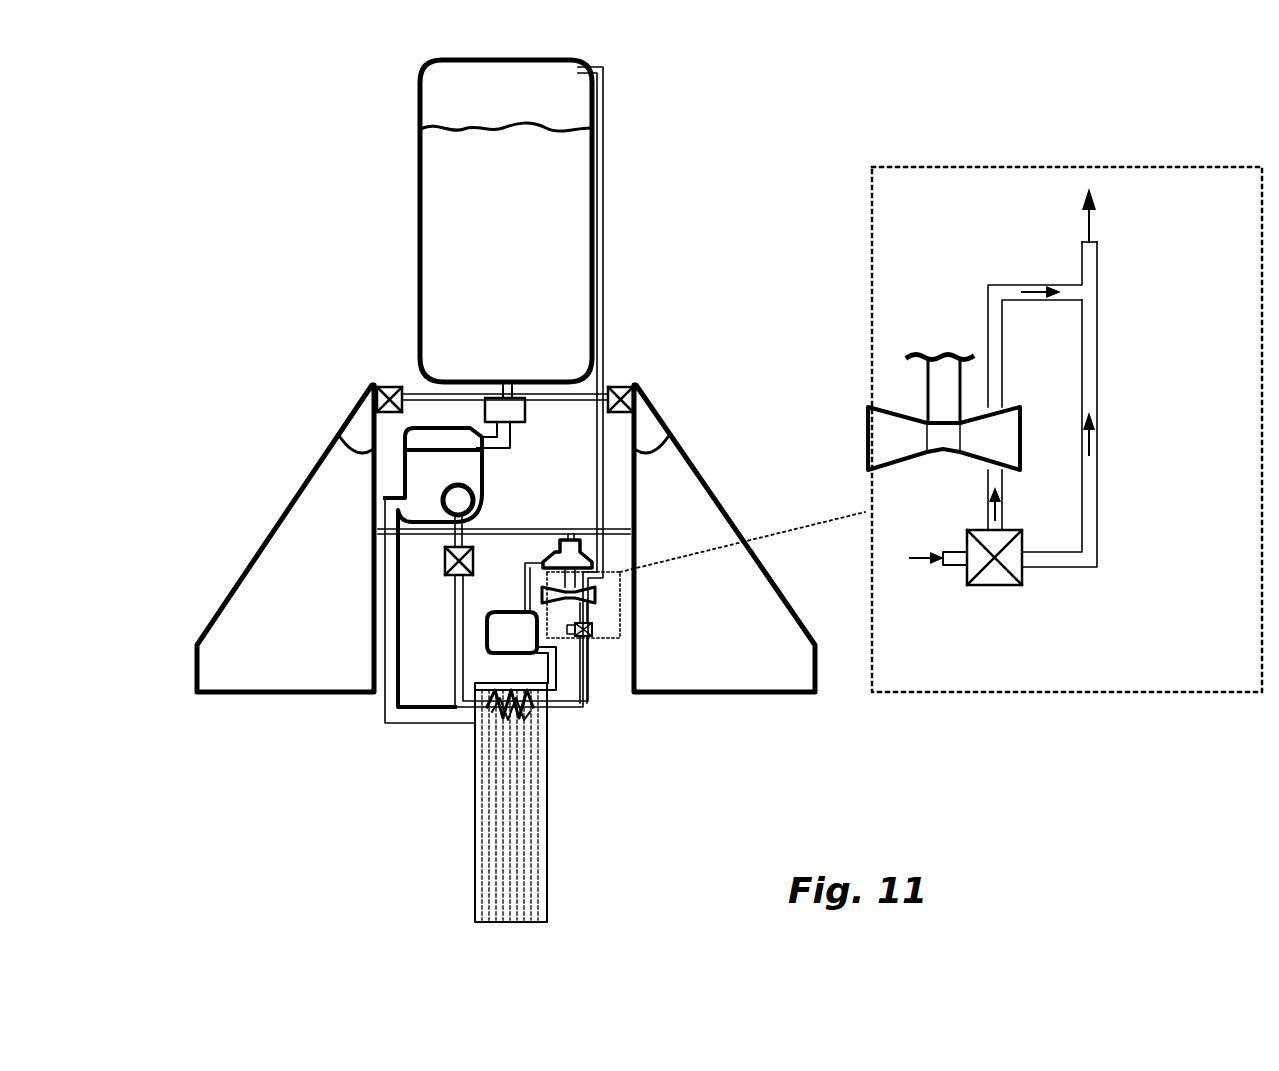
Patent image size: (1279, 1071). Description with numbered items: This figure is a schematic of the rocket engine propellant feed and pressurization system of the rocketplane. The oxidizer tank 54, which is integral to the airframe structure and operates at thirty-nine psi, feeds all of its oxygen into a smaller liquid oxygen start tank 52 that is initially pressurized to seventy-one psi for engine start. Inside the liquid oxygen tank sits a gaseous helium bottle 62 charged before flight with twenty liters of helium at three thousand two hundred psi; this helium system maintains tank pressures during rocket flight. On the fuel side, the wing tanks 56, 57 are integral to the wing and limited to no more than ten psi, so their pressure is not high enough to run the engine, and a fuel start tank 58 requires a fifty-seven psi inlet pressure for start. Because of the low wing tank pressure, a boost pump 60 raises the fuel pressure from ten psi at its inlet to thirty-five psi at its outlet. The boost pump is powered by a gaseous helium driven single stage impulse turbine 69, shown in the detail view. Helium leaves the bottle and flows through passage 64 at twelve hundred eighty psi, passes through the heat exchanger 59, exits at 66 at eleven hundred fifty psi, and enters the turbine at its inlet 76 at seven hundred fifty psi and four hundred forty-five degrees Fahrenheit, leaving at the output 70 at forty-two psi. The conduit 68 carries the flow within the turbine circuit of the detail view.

The liquid O2 start tank 52 is at (413, 462).
The oxidizer tank 54 is at (455, 190).
The wing fuel tank 56 is at (290, 568).
The wing fuel tank 57 is at (733, 675).
The fuel start tank 58 is at (502, 635).
The heat exchanger 59 is at (520, 707).
The boost pump 60 is at (570, 530).
The gaseous helium bottle 62 is at (467, 495).
The helium flow path 64 is at (458, 652).
The helium exit flow 66 is at (588, 672).
The outlet conduit 68 is at (1060, 558).
The single stage impulse turbine 69 is at (943, 393).
The turbine output 70 is at (1027, 285).
The turbine inlet 76 is at (988, 478).